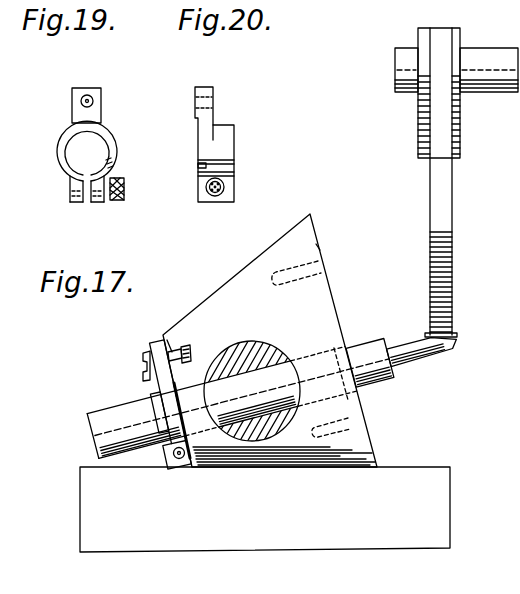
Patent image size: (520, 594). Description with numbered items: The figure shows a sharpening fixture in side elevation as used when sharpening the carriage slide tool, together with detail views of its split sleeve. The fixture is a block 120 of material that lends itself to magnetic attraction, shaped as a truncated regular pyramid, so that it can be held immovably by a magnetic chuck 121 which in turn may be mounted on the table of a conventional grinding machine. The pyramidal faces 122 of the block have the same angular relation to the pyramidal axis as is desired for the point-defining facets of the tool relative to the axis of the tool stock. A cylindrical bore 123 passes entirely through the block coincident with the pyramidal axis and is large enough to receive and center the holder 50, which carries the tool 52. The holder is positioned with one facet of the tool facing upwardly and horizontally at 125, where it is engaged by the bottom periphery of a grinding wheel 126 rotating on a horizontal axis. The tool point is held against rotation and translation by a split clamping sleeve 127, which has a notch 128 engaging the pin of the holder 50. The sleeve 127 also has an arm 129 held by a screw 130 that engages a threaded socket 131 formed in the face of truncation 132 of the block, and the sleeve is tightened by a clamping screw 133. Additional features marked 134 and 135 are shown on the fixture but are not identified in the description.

In FIG. 17, the holder 50 is at (112, 410).
In FIG. 17, the tool 52 is at (410, 362).
In FIG. 17, the block 120 is at (240, 272).
In FIG. 17, the magnetic chuck 121 is at (440, 513).
In FIG. 17, the pyramidal faces 122 is at (336, 298).
In FIG. 17, the bore 123 is at (263, 344).
In FIG. 17, the tool facet 125 is at (450, 336).
In FIG. 17, the grinding wheel 126 is at (452, 216).
In FIG. 19, the split clamping sleeve 127 is at (62, 165).
In FIG. 20, the split clamping sleeve 127 is at (225, 142).
In FIG. 17, the split clamping sleeve 127 is at (150, 396).
In FIG. 19, the notch 128 is at (118, 170).
In FIG. 20, the notch 128 is at (198, 166).
In FIG. 19, the arm 129 is at (101, 106).
In FIG. 20, the arm 129 is at (214, 110).
In FIG. 17, the arm 129 is at (192, 373).
In FIG. 17, the screw 130 is at (143, 358).
In FIG. 17, the threaded socket 131 is at (190, 335).
In FIG. 17, the face of truncation 132 is at (164, 339).
In FIG. 19, the clamping screw 133 is at (118, 202).
In FIG. 20, the clamping screw 133 is at (226, 186).
In FIG. 17, the clamping screw 133 is at (178, 462).
In FIG. 17, the pin hole 134 is at (318, 246).
In FIG. 17, the pin 135 is at (321, 248).